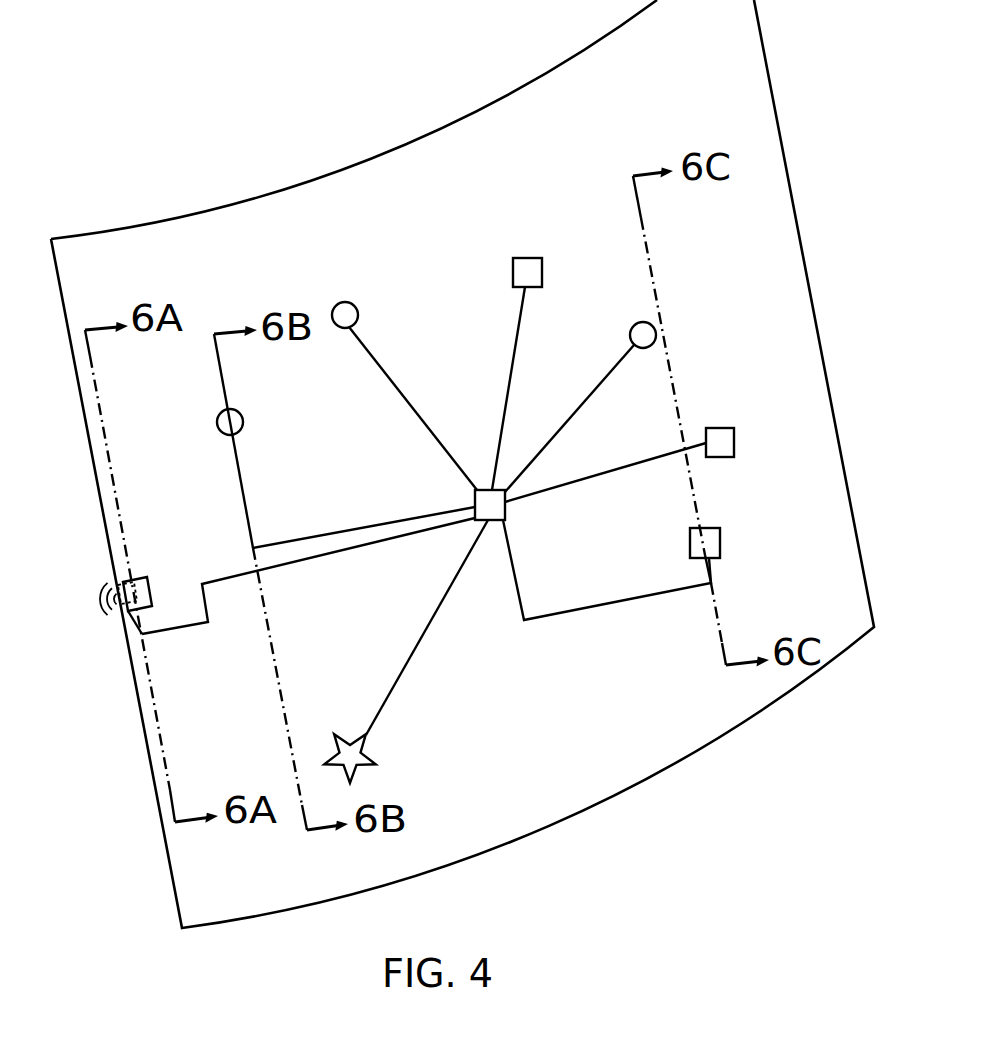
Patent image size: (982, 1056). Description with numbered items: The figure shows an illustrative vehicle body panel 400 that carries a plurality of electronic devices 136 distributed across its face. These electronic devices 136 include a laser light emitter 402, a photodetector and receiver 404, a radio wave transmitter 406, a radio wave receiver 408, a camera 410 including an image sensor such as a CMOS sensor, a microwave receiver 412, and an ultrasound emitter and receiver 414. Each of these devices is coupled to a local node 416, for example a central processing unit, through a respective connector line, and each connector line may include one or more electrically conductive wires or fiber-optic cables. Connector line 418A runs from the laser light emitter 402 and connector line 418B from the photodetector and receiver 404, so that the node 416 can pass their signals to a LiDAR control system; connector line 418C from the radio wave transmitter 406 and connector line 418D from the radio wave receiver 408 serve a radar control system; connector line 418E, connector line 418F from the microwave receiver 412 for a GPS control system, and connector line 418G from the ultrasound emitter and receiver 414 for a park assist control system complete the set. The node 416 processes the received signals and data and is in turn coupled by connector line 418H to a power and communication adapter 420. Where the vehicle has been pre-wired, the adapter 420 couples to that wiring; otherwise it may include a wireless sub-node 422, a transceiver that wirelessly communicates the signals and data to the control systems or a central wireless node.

The electronic devices 136 is at (462, 464).
The vehicle body panel 400 is at (462, 464).
The laser light emitter 402 is at (358, 313).
The photodetector and receiver 404 is at (527, 258).
The radio wave transmitter 406 is at (630, 338).
The radio wave receiver 408 is at (716, 428).
The camera 410 is at (721, 543).
The microwave receiver 412 is at (351, 738).
The ultrasound emitter and receiver 414 is at (243, 421).
The local node 416 is at (475, 497).
The connector line 418A is at (410, 407).
The connector line 418B is at (509, 378).
The connector line 418C is at (567, 423).
The connector line 418D is at (606, 474).
The connector line 418E is at (616, 603).
The connector line 418F is at (424, 637).
The connector line 418G is at (366, 526).
The connector line 418H is at (346, 550).
The power and communication adapter 420 is at (147, 581).
The wireless sub-node 422 is at (119, 583).